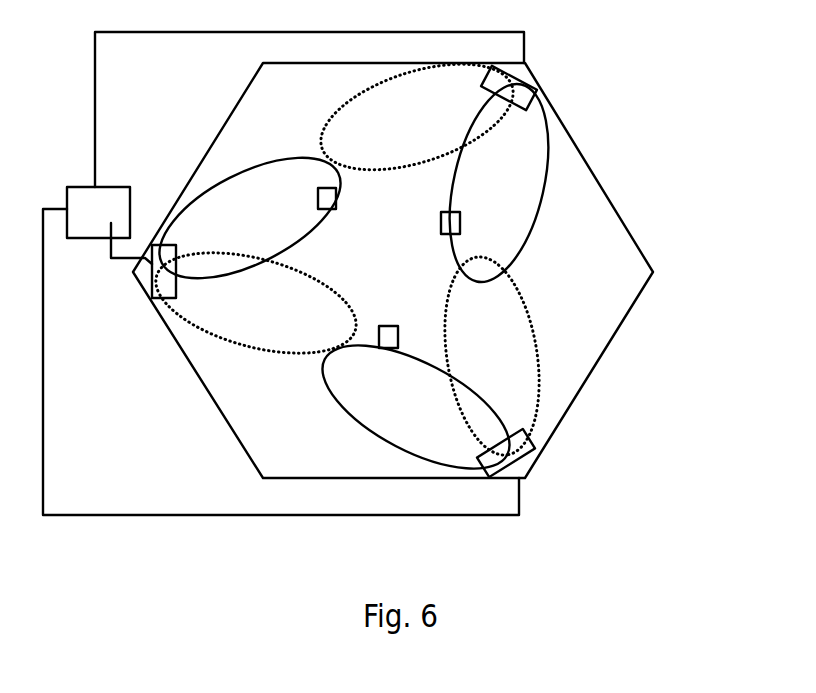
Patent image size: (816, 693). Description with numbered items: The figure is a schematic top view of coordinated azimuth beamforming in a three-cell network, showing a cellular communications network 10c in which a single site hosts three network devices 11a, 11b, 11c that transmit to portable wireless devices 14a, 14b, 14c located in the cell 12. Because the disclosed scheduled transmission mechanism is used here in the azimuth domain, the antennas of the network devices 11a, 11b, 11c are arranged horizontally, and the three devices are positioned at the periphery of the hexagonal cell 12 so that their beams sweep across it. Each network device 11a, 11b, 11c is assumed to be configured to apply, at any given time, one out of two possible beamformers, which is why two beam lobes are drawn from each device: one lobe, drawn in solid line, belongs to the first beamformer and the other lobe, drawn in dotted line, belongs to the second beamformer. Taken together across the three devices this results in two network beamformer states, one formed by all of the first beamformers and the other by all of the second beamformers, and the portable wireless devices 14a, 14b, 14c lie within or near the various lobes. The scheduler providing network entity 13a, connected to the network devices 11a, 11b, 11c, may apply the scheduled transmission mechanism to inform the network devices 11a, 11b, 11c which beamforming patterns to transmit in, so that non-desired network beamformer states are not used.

The cellular communications network 10c is at (679, 125).
The network device 11a is at (146, 272).
The network device 11b is at (536, 88).
The network device 11c is at (536, 457).
The cell 12 is at (210, 397).
The scheduler providing network entity 13a is at (122, 223).
The portable wireless device 14a is at (337, 206).
The portable wireless device 14b is at (388, 325).
The portable wireless device 14c is at (442, 232).